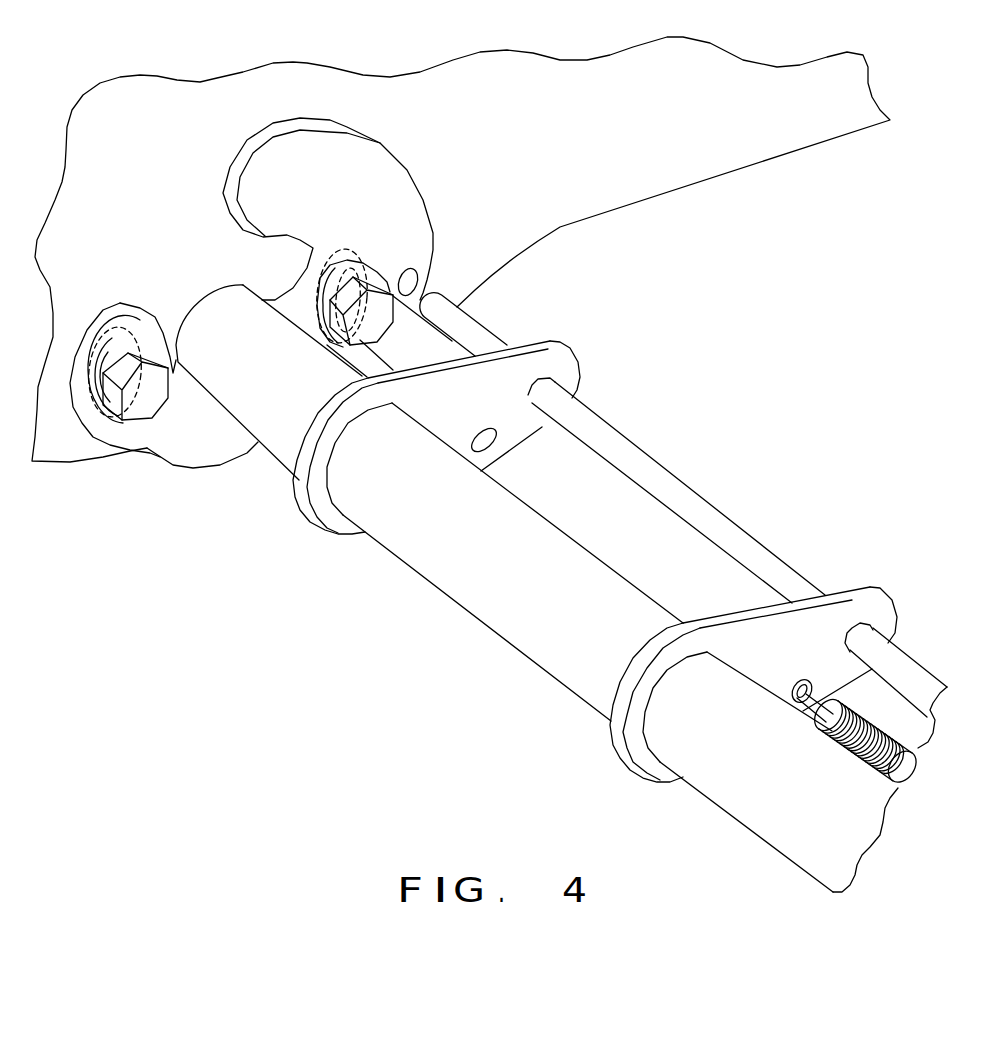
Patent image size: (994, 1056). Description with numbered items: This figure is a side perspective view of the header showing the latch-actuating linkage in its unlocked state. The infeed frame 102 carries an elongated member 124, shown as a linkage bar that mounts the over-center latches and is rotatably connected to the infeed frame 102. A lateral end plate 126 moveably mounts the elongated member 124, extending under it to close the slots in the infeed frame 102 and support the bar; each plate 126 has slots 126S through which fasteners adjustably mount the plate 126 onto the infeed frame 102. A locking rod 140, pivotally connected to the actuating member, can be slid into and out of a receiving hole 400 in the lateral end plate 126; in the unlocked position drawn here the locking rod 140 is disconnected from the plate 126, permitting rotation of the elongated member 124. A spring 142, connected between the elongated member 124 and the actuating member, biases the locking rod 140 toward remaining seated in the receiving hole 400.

The infeed frame 102 is at (607, 212).
The elongated member 124 is at (480, 603).
The plate 126 is at (295, 150).
The slot 126S is at (340, 262).
The locking rod 140 is at (640, 460).
The spring 142 is at (853, 740).
The receiving hole 400 is at (420, 280).